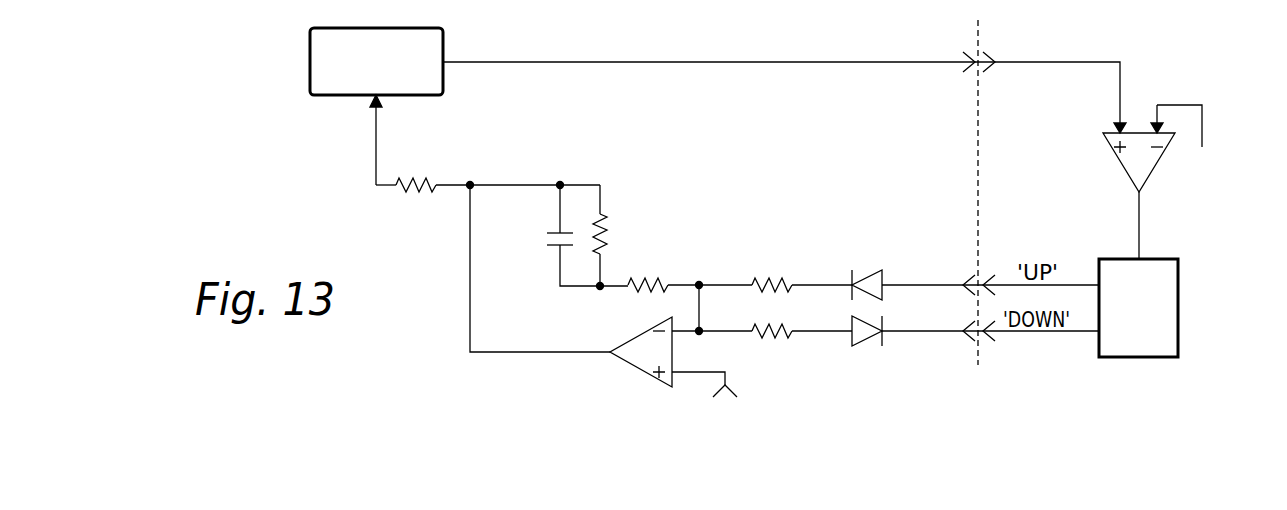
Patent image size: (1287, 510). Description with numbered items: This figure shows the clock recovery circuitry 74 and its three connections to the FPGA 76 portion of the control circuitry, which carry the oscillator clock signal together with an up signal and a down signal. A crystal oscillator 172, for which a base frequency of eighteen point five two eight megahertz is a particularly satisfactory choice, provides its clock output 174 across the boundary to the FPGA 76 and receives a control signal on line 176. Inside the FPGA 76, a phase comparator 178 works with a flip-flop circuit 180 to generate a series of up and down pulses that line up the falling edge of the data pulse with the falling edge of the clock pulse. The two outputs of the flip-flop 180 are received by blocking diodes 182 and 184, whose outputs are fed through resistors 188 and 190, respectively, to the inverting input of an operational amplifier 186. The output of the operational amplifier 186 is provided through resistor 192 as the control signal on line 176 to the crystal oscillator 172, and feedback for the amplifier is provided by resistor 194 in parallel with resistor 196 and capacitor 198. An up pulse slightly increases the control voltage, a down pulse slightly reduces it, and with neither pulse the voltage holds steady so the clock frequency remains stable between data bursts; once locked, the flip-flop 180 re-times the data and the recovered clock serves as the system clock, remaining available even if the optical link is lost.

The clock recovery circuitry 74 is at (420, 284).
The FPGA 76 is at (1196, 78).
The crystal oscillator 172 is at (356, 97).
The output 174 is at (703, 62).
The control signal line 176 is at (376, 148).
The phase comparator 178 is at (1158, 163).
The flip-flop circuit 180 is at (1180, 318).
The blocking diode 182 is at (862, 272).
The blocking diode 184 is at (866, 341).
The operational amplifier 186 is at (642, 370).
The resistor 188 is at (770, 280).
The resistor 190 is at (770, 338).
The resistor 192 is at (414, 190).
The resistor 194 is at (650, 280).
The resistor 196 is at (607, 230).
The capacitor 198 is at (546, 238).